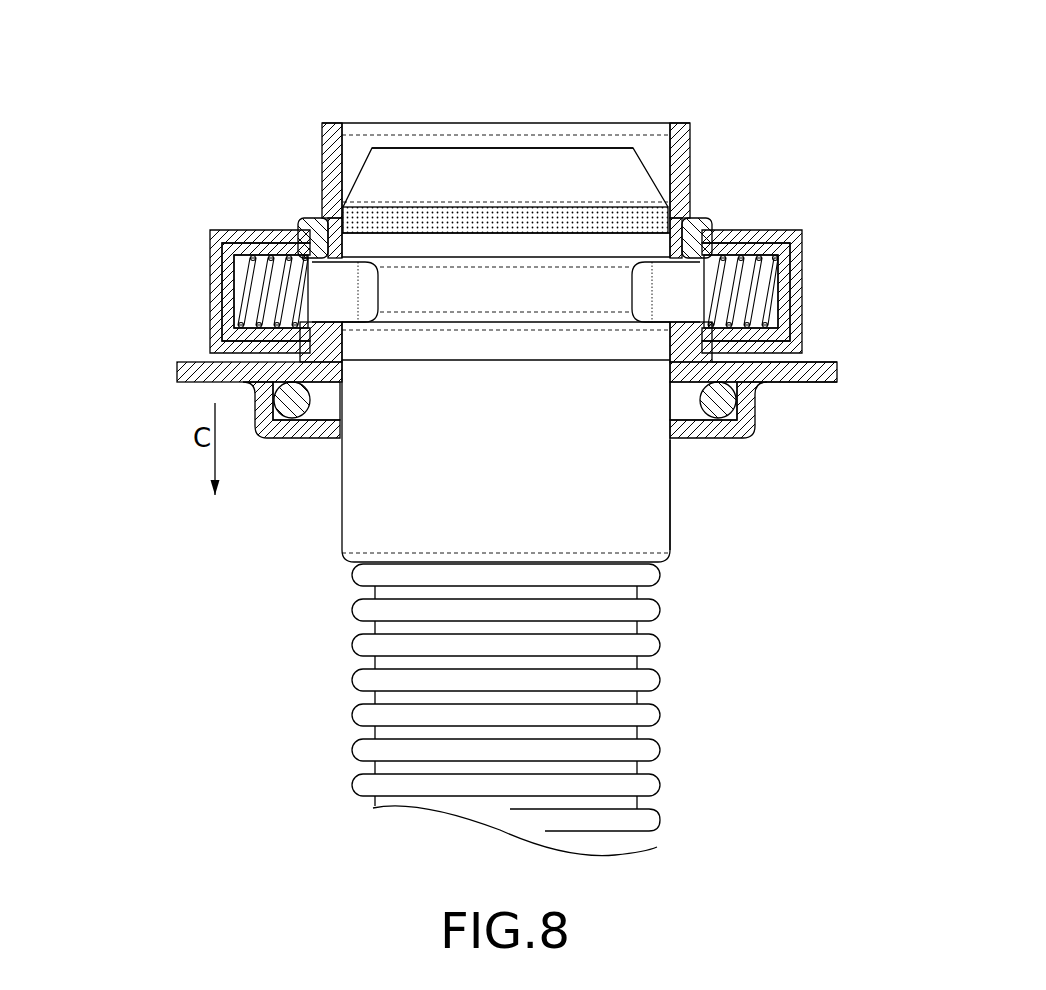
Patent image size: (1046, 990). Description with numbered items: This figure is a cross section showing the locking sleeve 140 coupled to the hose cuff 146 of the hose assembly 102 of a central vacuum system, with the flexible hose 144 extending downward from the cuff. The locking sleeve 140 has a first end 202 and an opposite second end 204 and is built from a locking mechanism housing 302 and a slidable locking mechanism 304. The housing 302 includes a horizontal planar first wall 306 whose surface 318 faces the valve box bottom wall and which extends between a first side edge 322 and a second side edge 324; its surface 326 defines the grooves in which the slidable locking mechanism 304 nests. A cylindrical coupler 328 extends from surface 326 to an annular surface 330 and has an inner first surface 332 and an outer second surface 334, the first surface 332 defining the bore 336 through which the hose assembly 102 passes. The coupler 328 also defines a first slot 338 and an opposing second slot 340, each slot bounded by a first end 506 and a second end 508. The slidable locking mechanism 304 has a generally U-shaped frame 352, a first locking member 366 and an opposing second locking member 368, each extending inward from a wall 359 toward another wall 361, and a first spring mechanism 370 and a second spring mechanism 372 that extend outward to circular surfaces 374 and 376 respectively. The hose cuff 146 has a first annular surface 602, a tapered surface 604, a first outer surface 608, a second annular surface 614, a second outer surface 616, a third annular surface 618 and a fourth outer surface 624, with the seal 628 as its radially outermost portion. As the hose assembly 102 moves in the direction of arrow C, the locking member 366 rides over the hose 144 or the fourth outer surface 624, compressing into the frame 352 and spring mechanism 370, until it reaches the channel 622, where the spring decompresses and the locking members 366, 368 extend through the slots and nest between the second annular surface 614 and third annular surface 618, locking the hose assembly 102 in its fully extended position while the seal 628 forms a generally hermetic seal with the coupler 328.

The hose assembly 102 is at (584, 710).
The locking sleeve 140 is at (280, 124).
The flexible hose 144 is at (664, 679).
The hose cuff 146 is at (673, 526).
The first end 202 is at (315, 92).
The second end 204 is at (322, 470).
The locking mechanism housing 302 is at (809, 422).
The slidable locking mechanism 304 is at (187, 193).
The horizontal planar first wall 306 is at (778, 384).
The surface 318 is at (807, 381).
The first side edge 322 is at (800, 377).
The second side edge 324 is at (177, 370).
The surface 326 is at (822, 361).
The cylindrical coupler 328 is at (771, 190).
The annular surface 330 is at (597, 151).
The first surface 332 is at (362, 138).
The second surface 334 is at (698, 148).
The bore 336 is at (660, 145).
The first slot 338 is at (814, 289).
The second slot 340 is at (194, 291).
The U-shaped frame 352 is at (187, 193).
The wall 359 is at (704, 218).
The wall 361 is at (312, 213).
The first locking member 366 is at (658, 305).
The second locking member 368 is at (350, 305).
The first spring mechanism 370 is at (814, 271).
The second spring mechanism 372 is at (194, 266).
The circular surface 374 is at (802, 301).
The circular surface 376 is at (210, 273).
The first end 506 is at (330, 281).
The second end 508 is at (680, 303).
The first annular surface 602 is at (408, 146).
The tapered surface 604 is at (505, 121).
The first outer surface 608 is at (542, 248).
The second annular surface 614 is at (417, 260).
The second outer surface 616 is at (460, 292).
The third annular surface 618 is at (483, 313).
The channel 622 is at (552, 294).
The fourth outer surface 624 is at (568, 411).
The seal 628 is at (500, 224).